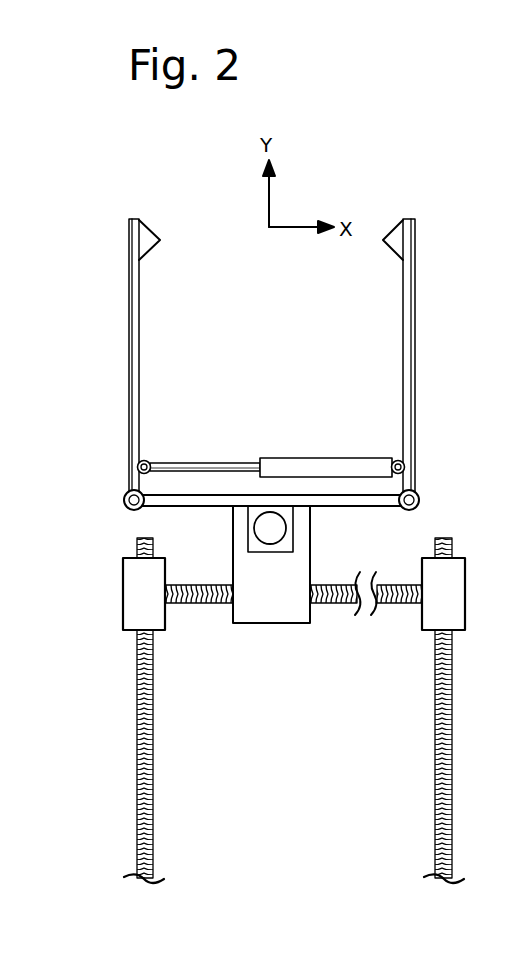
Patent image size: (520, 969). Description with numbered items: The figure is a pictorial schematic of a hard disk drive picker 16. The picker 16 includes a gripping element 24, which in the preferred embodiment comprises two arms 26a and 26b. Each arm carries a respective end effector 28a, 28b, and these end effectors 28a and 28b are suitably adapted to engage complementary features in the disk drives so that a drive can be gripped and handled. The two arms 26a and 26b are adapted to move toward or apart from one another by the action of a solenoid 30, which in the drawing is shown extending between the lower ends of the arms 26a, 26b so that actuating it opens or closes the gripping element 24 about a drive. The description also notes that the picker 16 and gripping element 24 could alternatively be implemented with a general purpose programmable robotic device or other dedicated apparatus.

The picker 16 is at (186, 177).
The gripping element 24 is at (308, 321).
The arm 26a is at (410, 330).
The arm 26b is at (135, 350).
The end effector 28a is at (388, 238).
The end effector 28b is at (157, 240).
The solenoid 30 is at (290, 440).